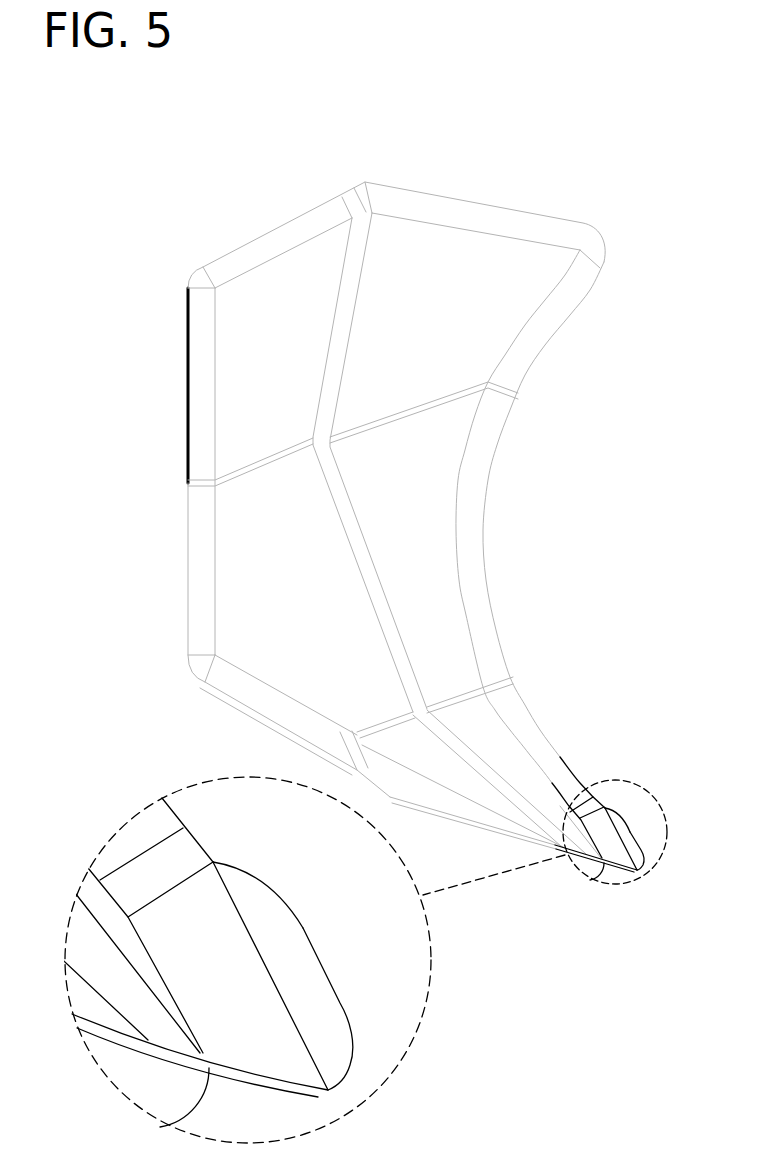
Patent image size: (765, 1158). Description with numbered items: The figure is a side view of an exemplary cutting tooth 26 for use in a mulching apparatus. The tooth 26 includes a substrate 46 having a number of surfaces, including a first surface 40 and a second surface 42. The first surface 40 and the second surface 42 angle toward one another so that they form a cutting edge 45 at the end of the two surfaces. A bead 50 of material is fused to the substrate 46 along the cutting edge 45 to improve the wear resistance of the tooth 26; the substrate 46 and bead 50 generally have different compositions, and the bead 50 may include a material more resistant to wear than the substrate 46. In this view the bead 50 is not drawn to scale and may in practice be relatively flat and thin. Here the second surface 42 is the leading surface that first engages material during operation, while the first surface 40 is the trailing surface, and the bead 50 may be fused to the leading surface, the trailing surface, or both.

The cutting tooth 26 is at (193, 203).
The substrate 46 is at (442, 636).
The second surface 42 is at (611, 814).
The bead 50 is at (630, 838).
The cutting edge 45 is at (328, 1090).
The first surface 40 is at (617, 862).